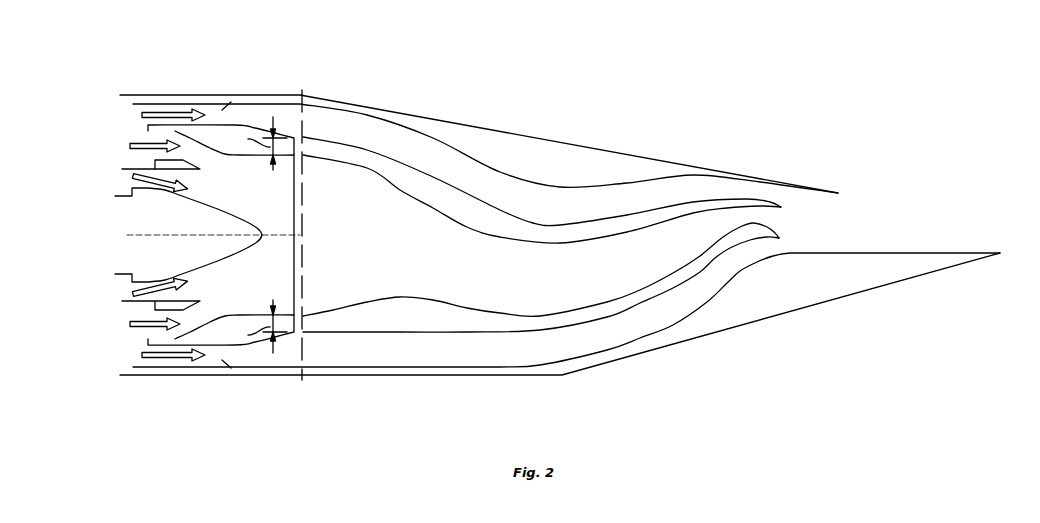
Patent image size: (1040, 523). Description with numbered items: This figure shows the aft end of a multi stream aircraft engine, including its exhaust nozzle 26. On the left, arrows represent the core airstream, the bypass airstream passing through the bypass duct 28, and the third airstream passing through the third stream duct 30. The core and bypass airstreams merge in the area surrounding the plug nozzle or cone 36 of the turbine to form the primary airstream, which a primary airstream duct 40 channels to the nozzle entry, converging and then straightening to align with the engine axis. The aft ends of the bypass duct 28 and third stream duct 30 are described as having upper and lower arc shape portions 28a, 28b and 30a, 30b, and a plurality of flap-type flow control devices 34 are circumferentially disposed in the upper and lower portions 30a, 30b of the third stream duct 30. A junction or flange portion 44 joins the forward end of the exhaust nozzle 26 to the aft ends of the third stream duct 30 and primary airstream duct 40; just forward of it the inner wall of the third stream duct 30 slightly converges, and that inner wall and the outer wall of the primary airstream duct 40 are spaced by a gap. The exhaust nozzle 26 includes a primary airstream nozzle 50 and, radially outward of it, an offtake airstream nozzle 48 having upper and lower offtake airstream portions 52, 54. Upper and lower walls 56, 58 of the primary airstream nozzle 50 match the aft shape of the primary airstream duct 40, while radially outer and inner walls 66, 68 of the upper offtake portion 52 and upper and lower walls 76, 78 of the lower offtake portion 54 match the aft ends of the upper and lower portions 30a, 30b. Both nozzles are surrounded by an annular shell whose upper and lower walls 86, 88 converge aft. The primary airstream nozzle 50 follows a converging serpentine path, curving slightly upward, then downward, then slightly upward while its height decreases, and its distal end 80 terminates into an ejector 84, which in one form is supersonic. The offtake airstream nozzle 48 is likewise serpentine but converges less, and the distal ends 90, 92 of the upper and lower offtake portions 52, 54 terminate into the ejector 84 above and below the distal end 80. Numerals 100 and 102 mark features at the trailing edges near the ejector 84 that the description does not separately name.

The exhaust nozzle 26 is at (452, 85).
The bypass duct 28 is at (206, 158).
The upper arc shape portion of the bypass duct 28a is at (186, 140).
The lower arc shape portion of the bypass duct 28b is at (192, 322).
The third stream duct 30 is at (294, 126).
The upper arc shape portion of the third stream duct 30a is at (247, 115).
The lower arc shape portion of the third stream duct 30b is at (262, 358).
The flow control device 34 is at (232, 102).
The plug nozzle or cone 36 is at (203, 210).
The primary airstream duct 40 is at (273, 200).
The junction or flange portion 44 is at (304, 90).
The offtake airstream nozzle 48 is at (344, 136).
The primary airstream nozzle 50 is at (371, 253).
The upper offtake airstream portion 52 is at (374, 142).
The lower offtake airstream portion 54 is at (376, 358).
The upper wall of the primary airstream nozzle 56 is at (397, 187).
The lower wall of the primary airstream nozzle 58 is at (460, 302).
The radially outer wall of the upper offtake airstream portion 66 is at (412, 135).
The radially inner wall of the upper offtake airstream portion 68 is at (467, 198).
The upper wall of the lower offtake airstream portion 76 is at (407, 333).
The lower wall of the lower offtake airstream portion 78 is at (468, 365).
The distal end of the primary airstream nozzle 80 is at (785, 220).
The ejector 84 is at (870, 231).
The upper wall of the shell 86 is at (493, 130).
The lower wall of the shell 88 is at (491, 378).
The distal end of the upper offtake airstream portion 90 is at (790, 201).
The distal end of the lower offtake airstream portion 92 is at (789, 242).
The upper flap trailing edge 100 is at (748, 213).
The lower flap trailing edge 102 is at (713, 247).